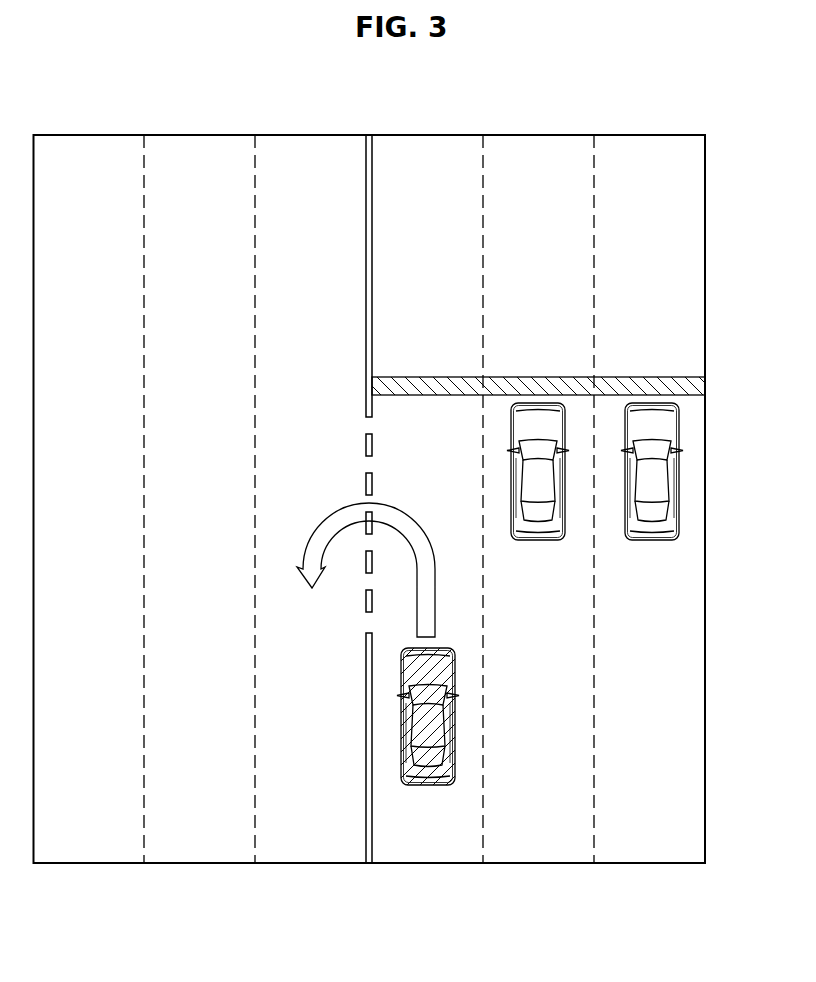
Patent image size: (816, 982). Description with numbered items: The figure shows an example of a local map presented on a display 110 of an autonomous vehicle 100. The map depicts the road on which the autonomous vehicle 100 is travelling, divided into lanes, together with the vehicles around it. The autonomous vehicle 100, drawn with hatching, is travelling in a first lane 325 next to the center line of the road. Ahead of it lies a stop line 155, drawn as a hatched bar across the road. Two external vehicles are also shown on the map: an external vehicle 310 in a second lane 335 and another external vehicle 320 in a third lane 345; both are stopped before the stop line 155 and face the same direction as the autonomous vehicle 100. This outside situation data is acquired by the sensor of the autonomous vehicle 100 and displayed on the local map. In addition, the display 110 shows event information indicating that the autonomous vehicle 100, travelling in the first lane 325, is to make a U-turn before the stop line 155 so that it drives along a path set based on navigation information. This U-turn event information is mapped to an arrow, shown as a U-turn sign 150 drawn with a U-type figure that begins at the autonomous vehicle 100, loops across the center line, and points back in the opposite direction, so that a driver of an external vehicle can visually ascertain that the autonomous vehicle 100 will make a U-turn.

The display 110 is at (705, 135).
The stop line 155 is at (668, 377).
The U-turn sign 150 is at (312, 588).
The autonomous vehicle 100 is at (426, 784).
The external vehicle 310 is at (540, 540).
The external vehicle 320 is at (648, 540).
The first lane 325 is at (470, 843).
The second lane 335 is at (540, 843).
The third lane 345 is at (650, 843).